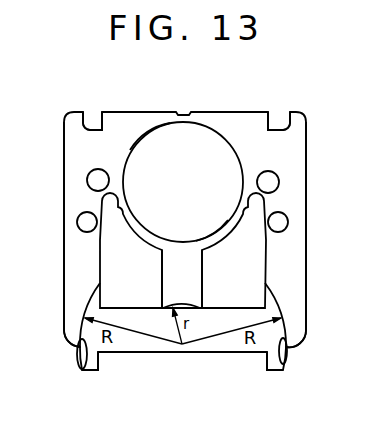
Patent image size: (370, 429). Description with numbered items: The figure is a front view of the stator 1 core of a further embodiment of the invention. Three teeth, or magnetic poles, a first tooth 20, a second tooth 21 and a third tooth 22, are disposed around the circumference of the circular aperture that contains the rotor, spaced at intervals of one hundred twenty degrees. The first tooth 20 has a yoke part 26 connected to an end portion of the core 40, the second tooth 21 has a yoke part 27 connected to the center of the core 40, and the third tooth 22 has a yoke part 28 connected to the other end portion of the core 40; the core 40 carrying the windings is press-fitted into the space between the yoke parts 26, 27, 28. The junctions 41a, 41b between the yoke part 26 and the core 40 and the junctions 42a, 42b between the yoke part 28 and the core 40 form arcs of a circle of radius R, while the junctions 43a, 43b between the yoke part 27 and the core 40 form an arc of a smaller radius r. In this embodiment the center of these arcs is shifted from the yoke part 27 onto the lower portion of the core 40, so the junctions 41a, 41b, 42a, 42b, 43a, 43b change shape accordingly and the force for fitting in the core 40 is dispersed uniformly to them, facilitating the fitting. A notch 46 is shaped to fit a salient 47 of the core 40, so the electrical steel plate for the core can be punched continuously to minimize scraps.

The stator 1 is at (306, 130).
The first tooth 20 is at (212, 130).
The second tooth 21 is at (212, 236).
The third tooth 22 is at (148, 132).
The yoke part 26 is at (293, 269).
The yoke part 27 is at (173, 272).
The yoke part 28 is at (70, 268).
The core 40 is at (233, 342).
The junction 41a is at (287, 326).
The junction 41b is at (285, 364).
The junction 42a is at (69, 342).
The junction 42b is at (83, 373).
The junction 43a is at (201, 290).
The junction 43b is at (197, 300).
The notch 46 is at (90, 125).
The salient 47 is at (99, 370).